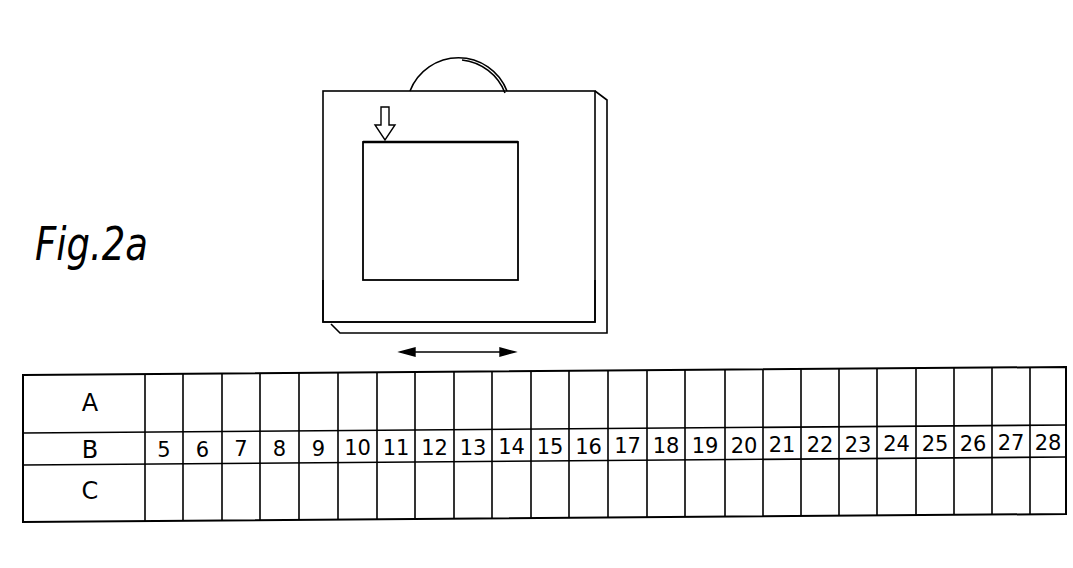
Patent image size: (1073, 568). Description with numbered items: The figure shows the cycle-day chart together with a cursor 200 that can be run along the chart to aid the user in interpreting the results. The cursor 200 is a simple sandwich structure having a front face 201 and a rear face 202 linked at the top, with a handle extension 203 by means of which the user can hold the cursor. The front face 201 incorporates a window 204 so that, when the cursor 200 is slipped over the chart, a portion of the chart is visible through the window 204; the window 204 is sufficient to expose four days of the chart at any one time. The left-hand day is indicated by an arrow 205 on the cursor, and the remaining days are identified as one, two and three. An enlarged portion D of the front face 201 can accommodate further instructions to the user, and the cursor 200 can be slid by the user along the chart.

The cursor 200 is at (323, 227).
The front face 201 is at (352, 298).
The rear face 202 is at (347, 327).
The handle extension 203 is at (465, 82).
The window 204 is at (380, 187).
The arrow 205 is at (382, 108).